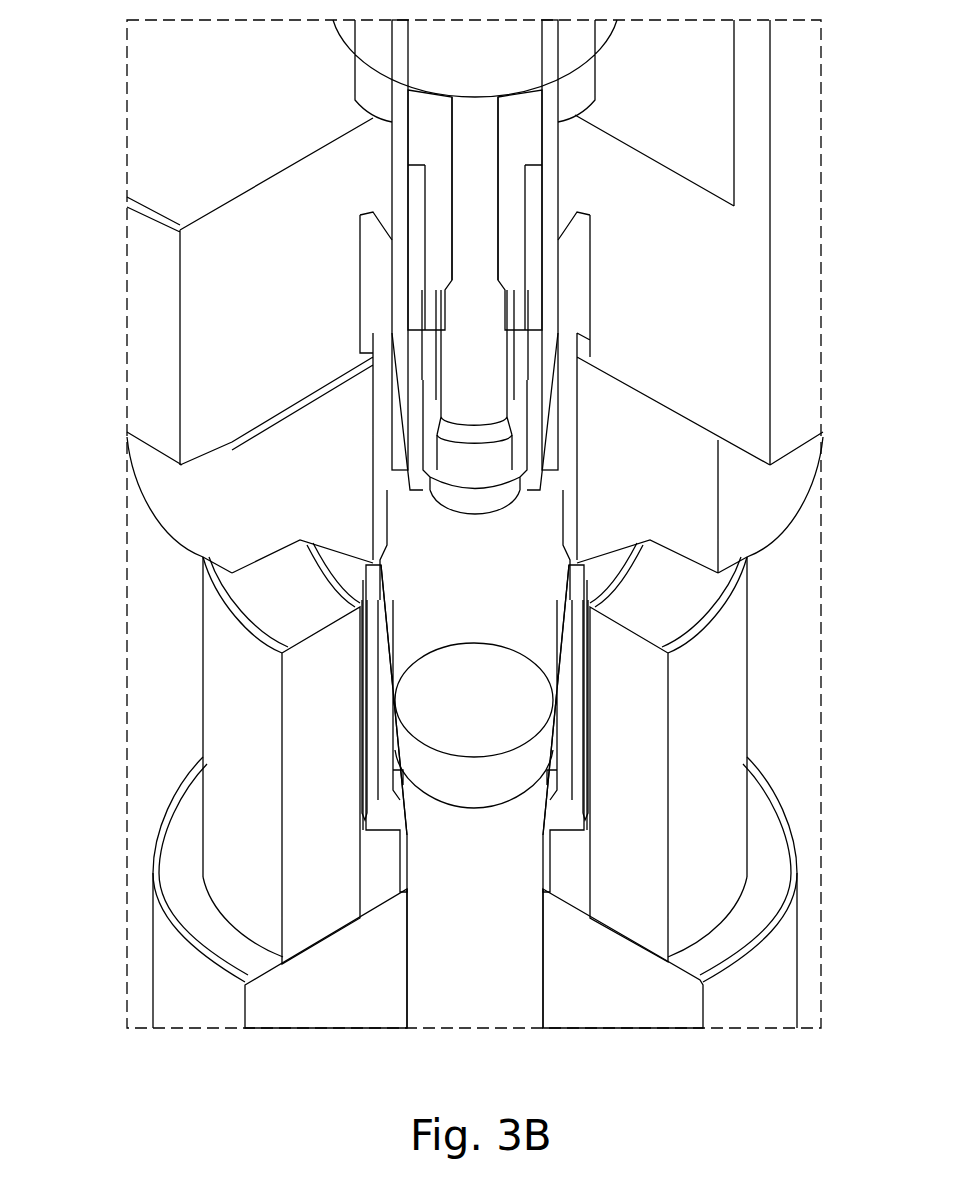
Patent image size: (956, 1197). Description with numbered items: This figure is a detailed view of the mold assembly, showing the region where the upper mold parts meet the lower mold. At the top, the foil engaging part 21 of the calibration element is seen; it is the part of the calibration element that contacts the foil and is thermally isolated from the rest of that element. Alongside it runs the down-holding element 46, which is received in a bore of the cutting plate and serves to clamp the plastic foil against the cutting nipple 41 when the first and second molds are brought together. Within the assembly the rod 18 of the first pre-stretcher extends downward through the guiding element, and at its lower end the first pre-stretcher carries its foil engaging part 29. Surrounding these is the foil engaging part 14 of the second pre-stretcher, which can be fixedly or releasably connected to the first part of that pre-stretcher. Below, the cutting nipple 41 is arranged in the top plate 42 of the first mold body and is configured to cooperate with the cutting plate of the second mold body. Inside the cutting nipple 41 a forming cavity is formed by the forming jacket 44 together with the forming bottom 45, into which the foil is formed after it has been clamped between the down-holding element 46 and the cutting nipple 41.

The foil engaging part 21 is at (428, 160).
The down-holding element 46 is at (362, 300).
The rod 18 is at (472, 383).
The foil engaging part 14 is at (413, 447).
The foil engaging part 29 is at (468, 505).
The forming jacket 44 is at (392, 728).
The top plate 42 is at (317, 825).
The cutting nipple 41 is at (375, 888).
The forming bottom 45 is at (470, 992).